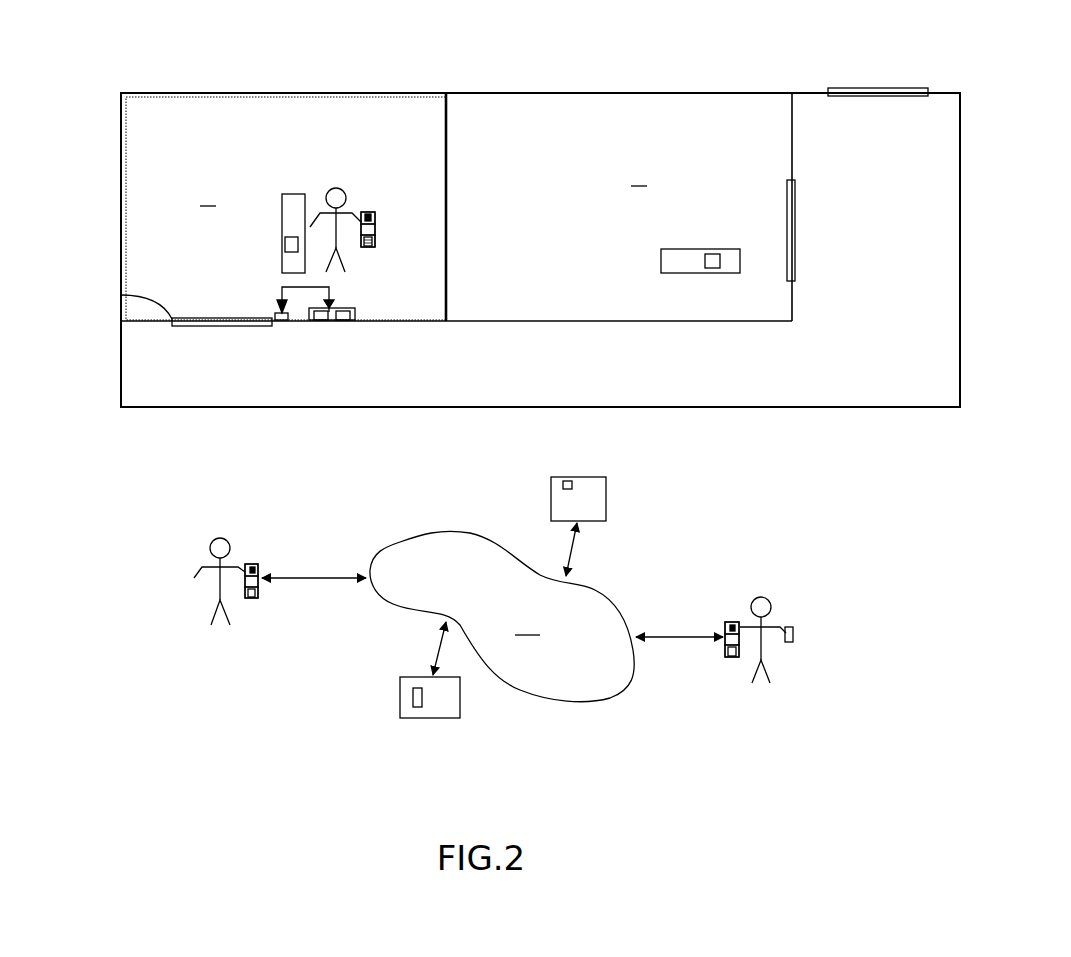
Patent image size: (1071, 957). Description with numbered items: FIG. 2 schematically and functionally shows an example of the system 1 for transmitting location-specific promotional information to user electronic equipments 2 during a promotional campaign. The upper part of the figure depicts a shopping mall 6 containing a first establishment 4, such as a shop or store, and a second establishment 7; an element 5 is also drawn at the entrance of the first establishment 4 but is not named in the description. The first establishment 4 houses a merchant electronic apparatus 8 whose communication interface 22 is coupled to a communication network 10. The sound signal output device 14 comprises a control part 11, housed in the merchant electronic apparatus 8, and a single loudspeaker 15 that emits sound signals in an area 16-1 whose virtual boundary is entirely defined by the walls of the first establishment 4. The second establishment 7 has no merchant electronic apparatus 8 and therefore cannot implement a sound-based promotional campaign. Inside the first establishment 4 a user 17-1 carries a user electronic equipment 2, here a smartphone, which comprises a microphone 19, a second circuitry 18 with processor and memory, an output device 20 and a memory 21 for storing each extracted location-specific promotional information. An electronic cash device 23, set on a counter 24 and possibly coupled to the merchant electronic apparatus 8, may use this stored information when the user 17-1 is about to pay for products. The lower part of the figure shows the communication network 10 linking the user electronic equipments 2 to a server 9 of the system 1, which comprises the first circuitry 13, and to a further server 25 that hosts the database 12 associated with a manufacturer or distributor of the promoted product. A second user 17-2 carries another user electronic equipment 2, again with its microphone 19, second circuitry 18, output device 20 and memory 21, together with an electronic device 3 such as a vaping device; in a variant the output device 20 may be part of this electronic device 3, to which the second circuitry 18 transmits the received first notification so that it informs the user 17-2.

The system 1 is at (351, 300).
The user electronic equipment 2 is at (376, 216).
The electronic device 3 is at (794, 632).
The first establishment 4 is at (208, 194).
The door 5 is at (121, 295).
The shopping mall 6 is at (121, 170).
The second establishment 7 is at (713, 221).
The merchant electronic apparatus 8 is at (355, 308).
The server 9 is at (405, 723).
The communication network 10 is at (502, 616).
The control part 11 is at (323, 321).
The database 12 is at (567, 481).
The first circuitry 13 is at (414, 697).
The sound signal output device 14 is at (351, 300).
The loudspeaker 15 is at (281, 321).
The area 16-1 is at (132, 122).
The user 17-1 is at (336, 188).
The user 17-2 is at (763, 642).
The second circuitry 18 is at (376, 237).
The microphone 19 is at (368, 213).
The output device 20 is at (376, 227).
The memory 21 is at (376, 245).
The communication interface 22 is at (351, 314).
The electronic cash device 23 is at (286, 238).
The counter 24 is at (296, 194).
The server 25 is at (606, 497).